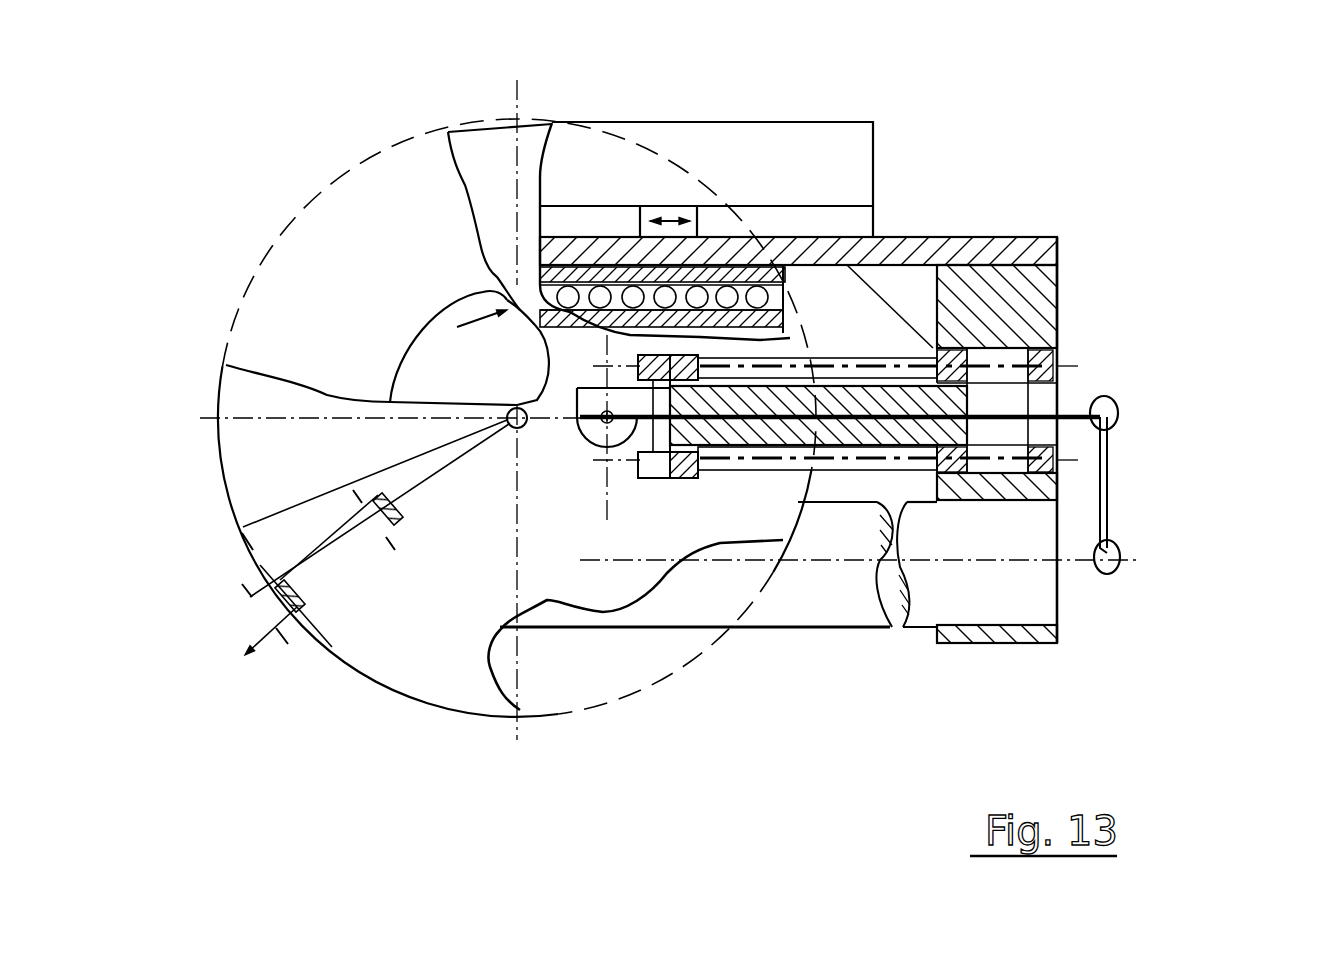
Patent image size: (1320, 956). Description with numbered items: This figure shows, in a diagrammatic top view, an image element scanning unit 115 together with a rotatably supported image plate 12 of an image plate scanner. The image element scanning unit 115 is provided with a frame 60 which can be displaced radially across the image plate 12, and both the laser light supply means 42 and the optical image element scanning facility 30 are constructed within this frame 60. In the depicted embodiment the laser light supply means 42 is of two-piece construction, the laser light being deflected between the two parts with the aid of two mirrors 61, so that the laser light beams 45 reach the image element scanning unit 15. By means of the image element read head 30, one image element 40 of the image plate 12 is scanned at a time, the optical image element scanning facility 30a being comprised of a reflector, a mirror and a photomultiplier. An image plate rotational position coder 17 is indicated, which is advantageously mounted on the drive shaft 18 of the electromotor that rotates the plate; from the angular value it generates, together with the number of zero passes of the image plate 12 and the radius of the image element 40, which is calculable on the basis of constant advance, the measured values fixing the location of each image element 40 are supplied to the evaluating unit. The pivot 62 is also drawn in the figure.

The image plate 12 is at (418, 675).
The image element scanning unit 15 is at (828, 138).
The image plate rotational position coder 17 is at (428, 355).
The drive shaft 18 is at (507, 420).
The optical image element scanning facility 30 is at (576, 455).
The optical image element scanning facility 30a is at (717, 500).
The image element 40 is at (360, 574).
The laser light supply means 42 is at (828, 658).
The laser light beams 45 is at (1065, 412).
The frame 60 is at (1030, 233).
The mirrors 61 is at (1115, 407).
The pivot 62 is at (513, 427).
The image element scanning unit 115 is at (1208, 261).